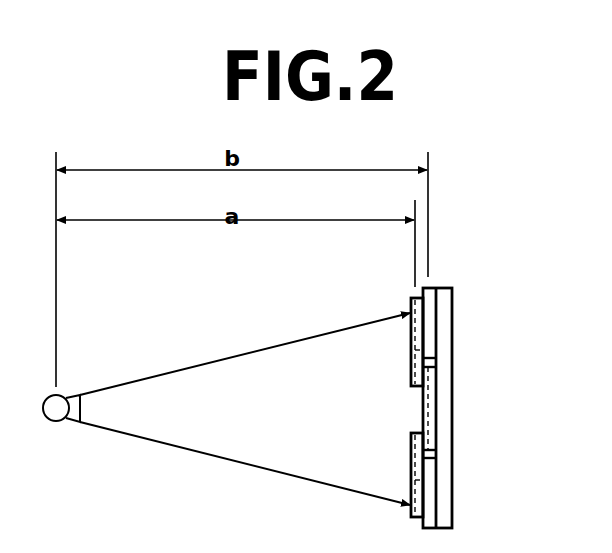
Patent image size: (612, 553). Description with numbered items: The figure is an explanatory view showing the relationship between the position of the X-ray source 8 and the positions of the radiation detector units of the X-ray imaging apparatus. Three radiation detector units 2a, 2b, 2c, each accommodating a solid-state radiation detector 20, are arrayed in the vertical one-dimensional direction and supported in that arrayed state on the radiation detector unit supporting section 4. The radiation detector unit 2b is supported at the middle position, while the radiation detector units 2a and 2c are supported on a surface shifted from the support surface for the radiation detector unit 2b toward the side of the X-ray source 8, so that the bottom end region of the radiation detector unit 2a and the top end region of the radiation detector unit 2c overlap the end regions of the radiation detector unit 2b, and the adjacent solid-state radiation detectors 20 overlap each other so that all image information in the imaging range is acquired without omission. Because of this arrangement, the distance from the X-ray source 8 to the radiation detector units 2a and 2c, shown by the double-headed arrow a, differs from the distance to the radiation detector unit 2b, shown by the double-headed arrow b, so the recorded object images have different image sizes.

The radiation detector unit supporting section 4 is at (447, 310).
The radiation detector unit 2a is at (425, 325).
The radiation detector unit 2b is at (436, 393).
The radiation detector unit 2c is at (425, 505).
The solid-state radiation detector 20 is at (415, 350).
The X-ray source 8 is at (57, 400).